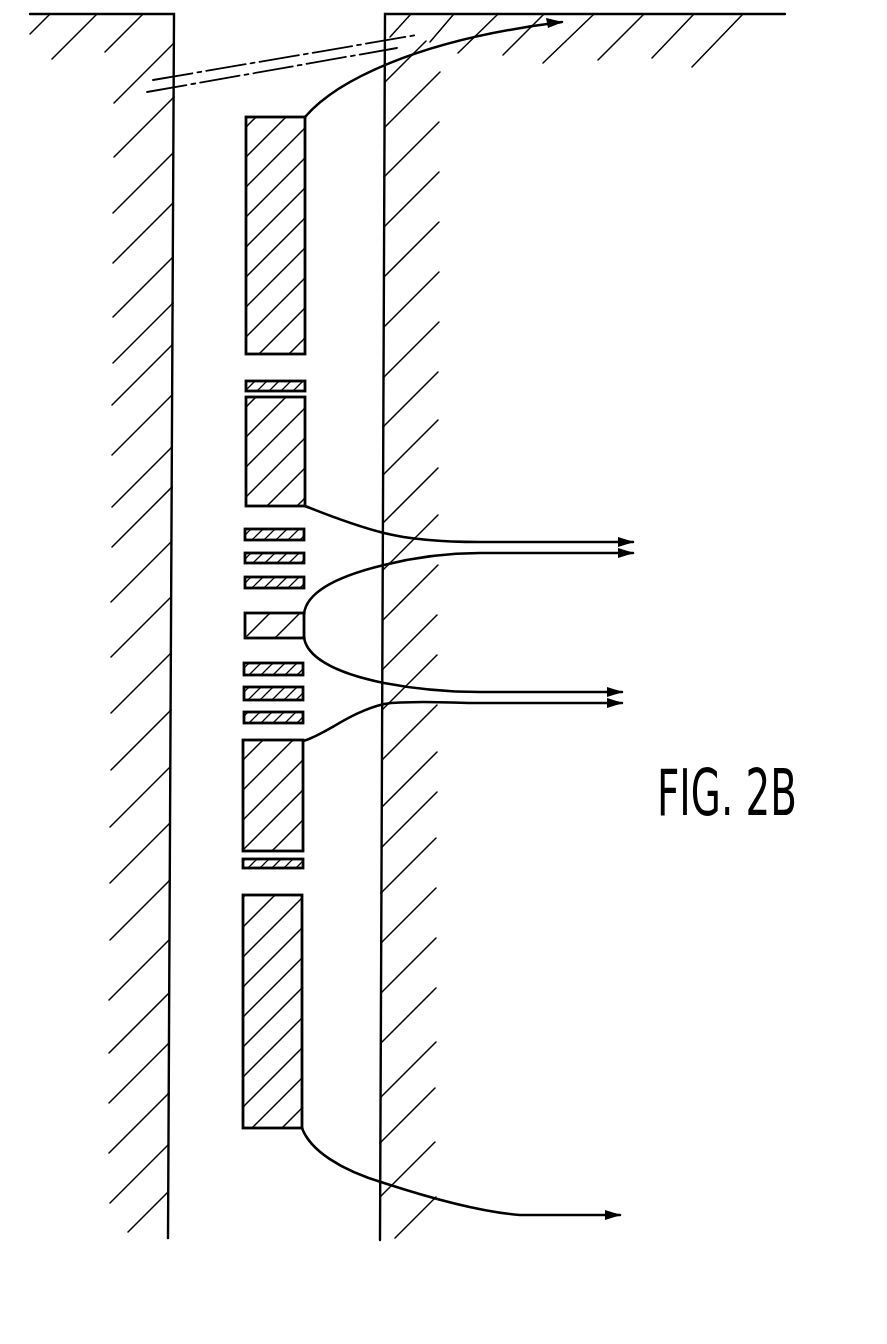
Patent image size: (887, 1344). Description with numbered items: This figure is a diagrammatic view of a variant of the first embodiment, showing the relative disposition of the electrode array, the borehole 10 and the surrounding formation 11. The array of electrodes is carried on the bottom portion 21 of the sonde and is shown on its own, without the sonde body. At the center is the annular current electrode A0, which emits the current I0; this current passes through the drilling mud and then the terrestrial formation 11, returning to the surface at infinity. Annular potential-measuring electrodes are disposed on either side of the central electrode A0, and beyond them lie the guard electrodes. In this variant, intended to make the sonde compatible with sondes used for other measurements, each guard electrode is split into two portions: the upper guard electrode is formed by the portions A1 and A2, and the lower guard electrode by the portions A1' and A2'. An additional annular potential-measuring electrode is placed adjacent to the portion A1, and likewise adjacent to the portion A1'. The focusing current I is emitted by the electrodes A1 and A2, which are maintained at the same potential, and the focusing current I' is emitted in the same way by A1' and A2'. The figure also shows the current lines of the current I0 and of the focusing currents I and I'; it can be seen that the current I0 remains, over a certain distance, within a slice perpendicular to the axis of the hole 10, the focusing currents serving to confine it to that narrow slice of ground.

The guard electrode portion A2 is at (192, 235).
The guard electrode portion A1 is at (182, 451).
The central annular electrode A0 is at (243, 630).
The guard electrode portion A1' is at (171, 795).
The guard electrode portion A2' is at (173, 1011).
The bottom portion 21 is at (207, 1153).
The borehole 10 is at (381, 1220).
The formation 11 is at (406, 390).
The focusing current I is at (434, 125).
The current I0 is at (475, 612).
The focusing current I' is at (461, 1057).